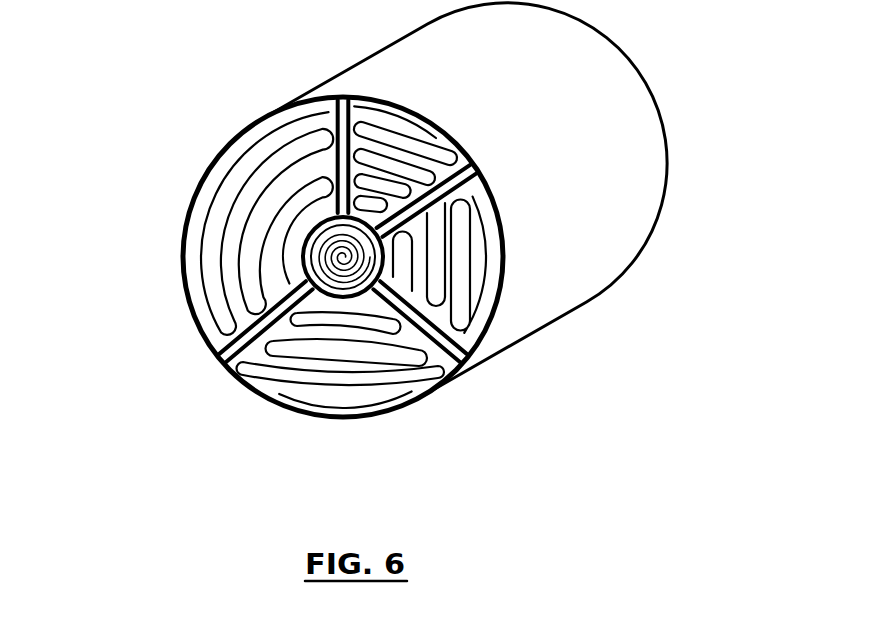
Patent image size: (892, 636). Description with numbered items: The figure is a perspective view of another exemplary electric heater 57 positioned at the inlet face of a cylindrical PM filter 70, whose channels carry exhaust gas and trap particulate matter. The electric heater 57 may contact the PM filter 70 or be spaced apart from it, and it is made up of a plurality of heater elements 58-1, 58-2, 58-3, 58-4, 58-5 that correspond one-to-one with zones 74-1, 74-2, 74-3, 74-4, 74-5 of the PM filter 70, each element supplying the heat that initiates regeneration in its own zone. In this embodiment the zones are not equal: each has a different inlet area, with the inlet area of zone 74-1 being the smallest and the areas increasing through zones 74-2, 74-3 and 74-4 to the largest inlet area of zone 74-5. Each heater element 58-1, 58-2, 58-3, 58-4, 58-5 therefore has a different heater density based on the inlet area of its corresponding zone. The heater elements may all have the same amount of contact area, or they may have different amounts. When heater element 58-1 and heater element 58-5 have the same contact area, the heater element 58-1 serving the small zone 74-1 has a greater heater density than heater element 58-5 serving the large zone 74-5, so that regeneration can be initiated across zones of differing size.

The electric heater 57 is at (361, 249).
The PM filter 70 is at (367, 58).
The heater element 58-1 is at (352, 285).
The heater element 58-2 is at (446, 133).
The heater element 58-3 is at (497, 309).
The heater element 58-4 is at (322, 403).
The heater element 58-5 is at (209, 219).
The zone 74-1 is at (236, 99).
The zone 74-2 is at (410, 160).
The zone 74-3 is at (466, 266).
The zone 74-4 is at (338, 393).
The zone 74-5 is at (209, 219).